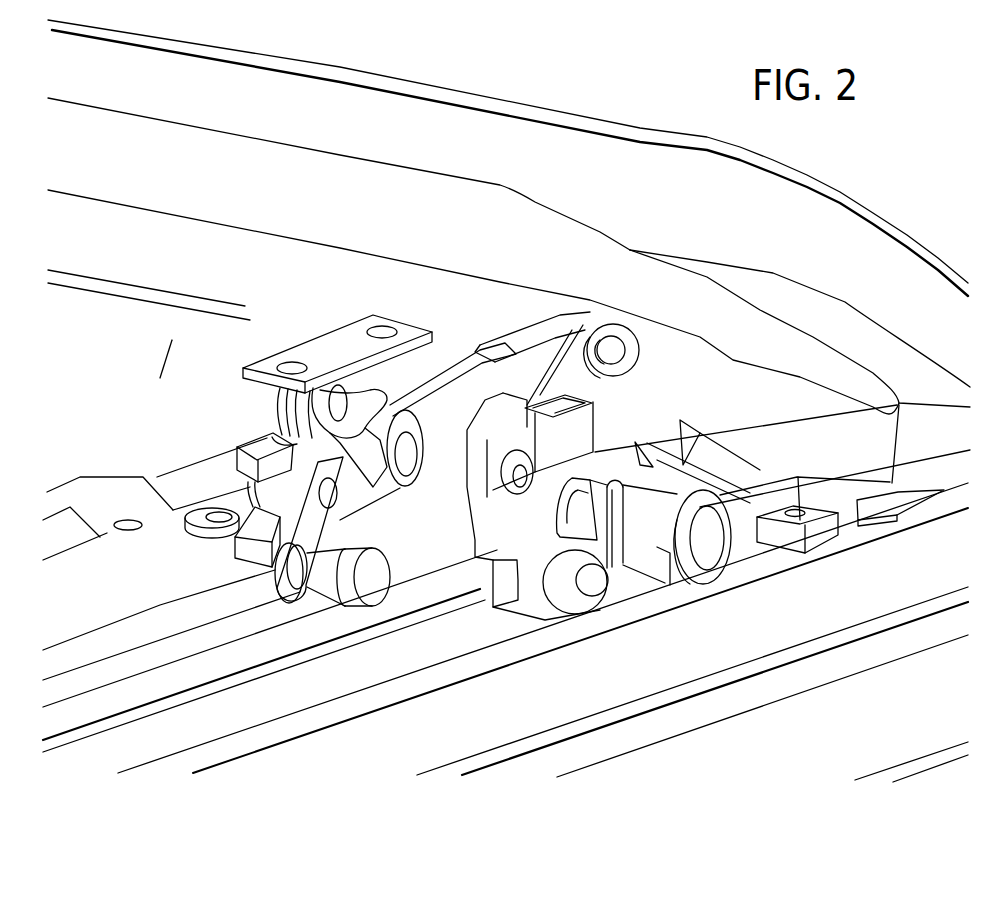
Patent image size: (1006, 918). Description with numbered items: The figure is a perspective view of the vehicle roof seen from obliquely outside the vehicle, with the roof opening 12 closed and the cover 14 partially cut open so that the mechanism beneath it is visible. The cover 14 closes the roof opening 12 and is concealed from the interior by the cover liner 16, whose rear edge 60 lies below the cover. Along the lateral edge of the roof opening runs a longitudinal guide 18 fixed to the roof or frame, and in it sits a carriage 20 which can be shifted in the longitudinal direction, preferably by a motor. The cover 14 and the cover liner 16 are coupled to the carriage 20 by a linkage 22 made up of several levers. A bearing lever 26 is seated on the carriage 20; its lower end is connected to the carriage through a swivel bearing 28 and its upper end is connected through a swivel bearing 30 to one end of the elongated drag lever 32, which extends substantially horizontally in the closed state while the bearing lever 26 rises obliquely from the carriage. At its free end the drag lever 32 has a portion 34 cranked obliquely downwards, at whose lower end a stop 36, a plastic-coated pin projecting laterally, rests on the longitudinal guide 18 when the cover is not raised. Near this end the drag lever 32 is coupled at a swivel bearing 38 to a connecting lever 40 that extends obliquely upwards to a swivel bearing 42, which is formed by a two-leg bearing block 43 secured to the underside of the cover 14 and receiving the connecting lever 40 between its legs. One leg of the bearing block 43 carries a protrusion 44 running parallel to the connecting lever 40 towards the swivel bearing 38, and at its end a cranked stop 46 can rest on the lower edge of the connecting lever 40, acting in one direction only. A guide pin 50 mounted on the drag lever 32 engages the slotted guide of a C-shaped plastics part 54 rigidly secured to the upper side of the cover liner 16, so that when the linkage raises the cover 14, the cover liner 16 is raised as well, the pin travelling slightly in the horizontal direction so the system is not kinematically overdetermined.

The roof opening 12 is at (187, 648).
The cover 14 is at (672, 138).
The cover liner 16 is at (160, 378).
The longitudinal guide 18 is at (92, 710).
The carriage 20 is at (668, 443).
The linkage 22 is at (436, 302).
The bearing lever 26 is at (588, 393).
The swivel bearing 28 is at (590, 480).
The swivel bearing 30 is at (620, 348).
The drag lever 32 is at (515, 350).
The cranked portion 34 is at (327, 525).
The stop 36 is at (300, 577).
The swivel bearing 38 is at (407, 463).
The connecting lever 40 is at (390, 408).
The swivel bearing 42 is at (338, 385).
The bearing block 43 is at (274, 358).
The protrusion 44 is at (363, 398).
The cranked stop 46 is at (320, 447).
The guide pin 50 is at (253, 500).
The plastics part 54 is at (240, 513).
The rear edge 60 is at (115, 288).